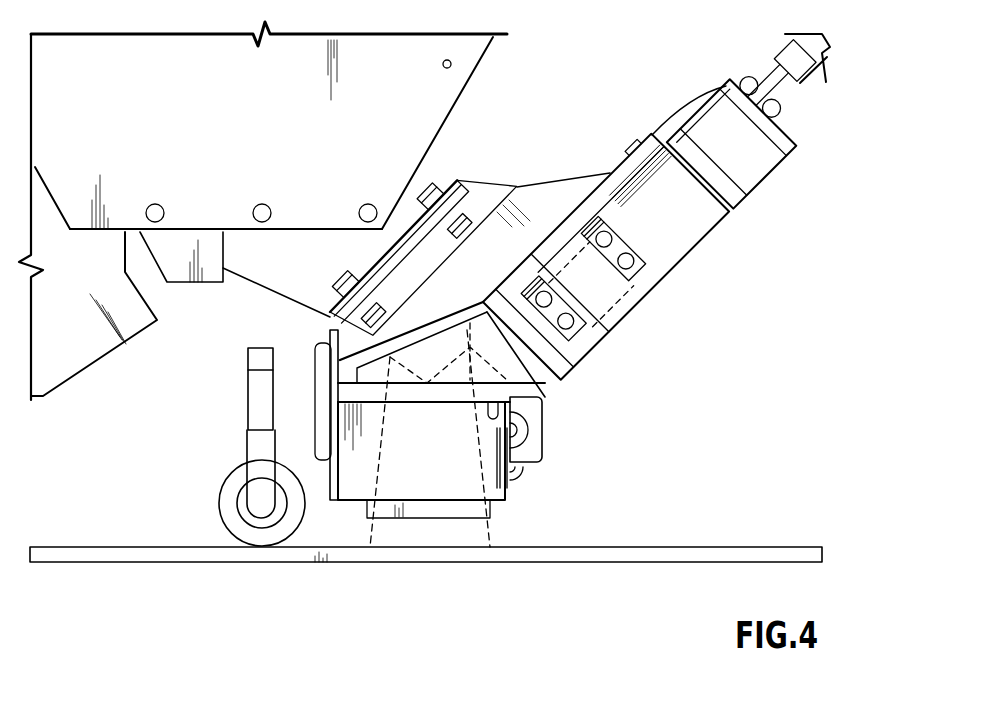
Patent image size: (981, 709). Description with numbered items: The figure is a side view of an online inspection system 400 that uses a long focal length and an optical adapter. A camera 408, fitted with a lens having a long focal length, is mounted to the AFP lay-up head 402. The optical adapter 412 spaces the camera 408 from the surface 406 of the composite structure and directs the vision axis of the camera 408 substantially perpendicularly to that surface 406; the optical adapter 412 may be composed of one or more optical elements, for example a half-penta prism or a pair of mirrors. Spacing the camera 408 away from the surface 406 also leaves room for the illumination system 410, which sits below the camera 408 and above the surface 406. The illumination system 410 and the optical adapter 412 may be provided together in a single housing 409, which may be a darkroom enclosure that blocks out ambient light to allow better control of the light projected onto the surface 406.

The online inspection system 400 is at (535, 96).
The AFP lay-up head 402 is at (428, 101).
The surface 406 is at (609, 547).
The camera 408 is at (664, 229).
The housing 409 is at (620, 313).
The illumination system 410 is at (350, 484).
The optical adapter 412 is at (474, 371).